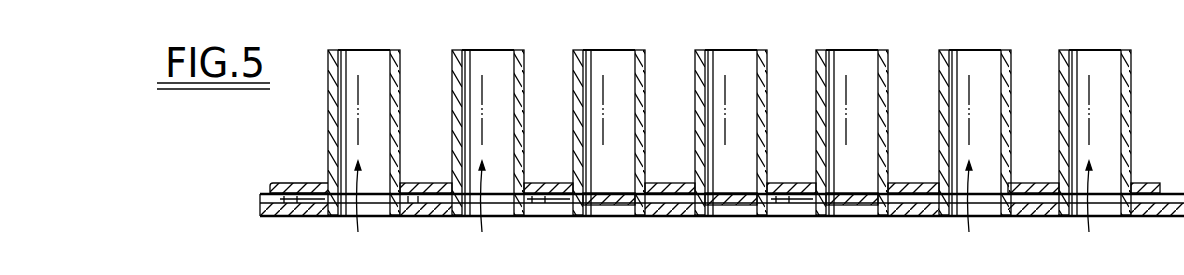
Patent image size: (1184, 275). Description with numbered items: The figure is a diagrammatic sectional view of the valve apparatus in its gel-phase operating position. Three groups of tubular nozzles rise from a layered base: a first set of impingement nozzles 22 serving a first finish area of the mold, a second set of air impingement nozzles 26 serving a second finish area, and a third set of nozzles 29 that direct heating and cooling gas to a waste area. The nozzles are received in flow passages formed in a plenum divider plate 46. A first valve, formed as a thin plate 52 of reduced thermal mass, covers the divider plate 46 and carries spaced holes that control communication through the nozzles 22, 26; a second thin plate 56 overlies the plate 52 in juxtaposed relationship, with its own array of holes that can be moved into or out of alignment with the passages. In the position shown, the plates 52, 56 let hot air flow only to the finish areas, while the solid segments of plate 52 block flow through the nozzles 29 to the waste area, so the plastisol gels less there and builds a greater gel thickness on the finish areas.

The first set of impingement nozzles 22 is at (1008, 52).
The second set of air impingement nozzles 26 is at (400, 52).
The third set of nozzles 29 is at (645, 52).
The plenum divider plate 46 is at (292, 190).
The thin plate 52 is at (262, 197).
The second thin plate 56 is at (287, 217).